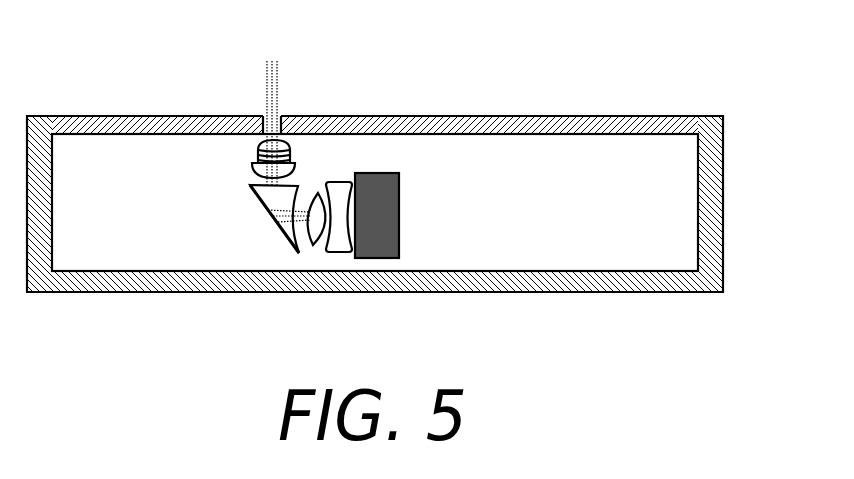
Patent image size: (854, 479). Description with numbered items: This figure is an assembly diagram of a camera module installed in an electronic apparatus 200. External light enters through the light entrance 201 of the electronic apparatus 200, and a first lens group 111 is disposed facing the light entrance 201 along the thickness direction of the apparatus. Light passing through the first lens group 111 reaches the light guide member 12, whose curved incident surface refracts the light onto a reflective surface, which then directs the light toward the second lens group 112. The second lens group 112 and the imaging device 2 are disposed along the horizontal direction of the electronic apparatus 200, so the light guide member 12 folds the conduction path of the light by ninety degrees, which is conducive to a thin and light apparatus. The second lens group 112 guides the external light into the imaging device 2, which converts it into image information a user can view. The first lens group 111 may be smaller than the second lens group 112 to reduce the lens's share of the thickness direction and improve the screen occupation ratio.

The electronic apparatus 200 is at (723, 165).
The light entrance 201 is at (263, 114).
The first lens group 111 is at (253, 156).
The light guide member 12 is at (253, 192).
The second lens group 112 is at (332, 183).
The imaging device 2 is at (400, 195).